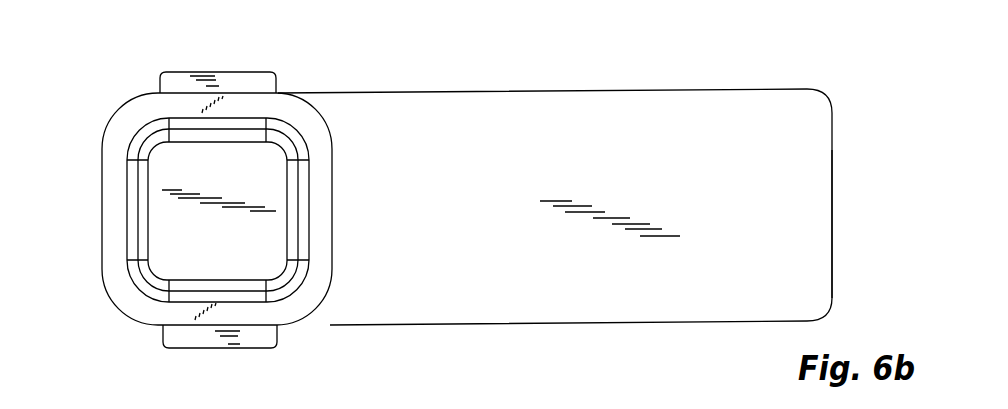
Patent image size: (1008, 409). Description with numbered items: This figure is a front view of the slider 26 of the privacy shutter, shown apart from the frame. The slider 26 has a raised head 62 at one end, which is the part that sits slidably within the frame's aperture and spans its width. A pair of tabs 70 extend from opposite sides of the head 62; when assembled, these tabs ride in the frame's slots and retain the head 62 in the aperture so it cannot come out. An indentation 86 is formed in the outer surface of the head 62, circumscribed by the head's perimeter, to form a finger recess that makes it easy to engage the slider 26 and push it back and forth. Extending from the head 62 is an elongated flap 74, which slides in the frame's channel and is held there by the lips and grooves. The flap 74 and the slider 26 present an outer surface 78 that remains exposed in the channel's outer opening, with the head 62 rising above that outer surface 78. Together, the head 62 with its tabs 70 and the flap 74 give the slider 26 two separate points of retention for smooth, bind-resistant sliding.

The slider 26 is at (745, 127).
The head 62 is at (157, 141).
The pair of tabs 70 is at (242, 68).
The flap 74 is at (812, 212).
The outer surface 78 is at (447, 157).
The indentation 86 is at (178, 228).